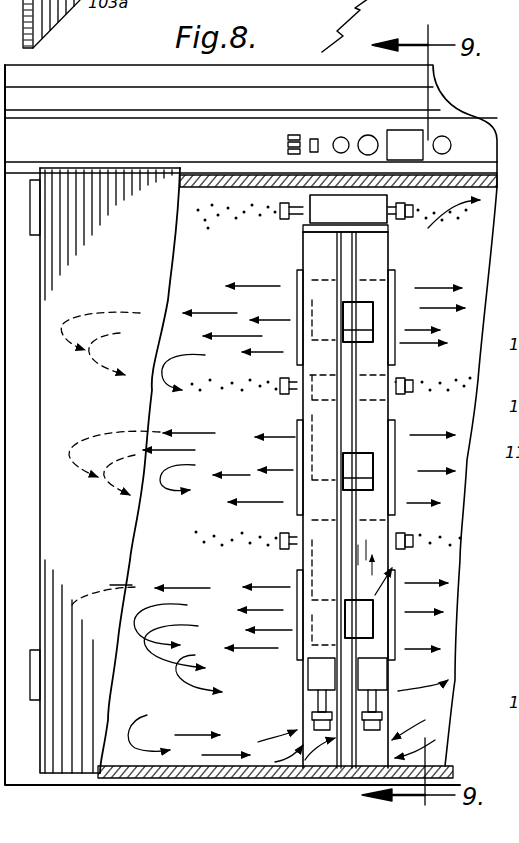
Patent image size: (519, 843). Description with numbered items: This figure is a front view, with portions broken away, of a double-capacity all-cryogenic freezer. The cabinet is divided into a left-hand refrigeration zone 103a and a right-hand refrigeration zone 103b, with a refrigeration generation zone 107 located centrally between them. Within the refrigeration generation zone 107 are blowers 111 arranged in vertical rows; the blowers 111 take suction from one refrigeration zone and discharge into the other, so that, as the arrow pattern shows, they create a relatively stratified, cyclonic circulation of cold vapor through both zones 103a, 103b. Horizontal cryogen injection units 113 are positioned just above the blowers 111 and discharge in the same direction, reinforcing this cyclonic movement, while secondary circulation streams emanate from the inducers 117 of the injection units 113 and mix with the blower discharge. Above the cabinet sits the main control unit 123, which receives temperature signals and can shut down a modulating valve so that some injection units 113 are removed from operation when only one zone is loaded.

The main control unit 123 is at (364, 102).
The inducer 117 is at (368, 221).
The blower 111 is at (364, 312).
The refrigeration generation zone 107 is at (388, 485).
The left-hand refrigeration zone 103a is at (228, 426).
The right-hand refrigeration zone 103b is at (455, 422).
The cryogen injection unit 113 is at (390, 697).